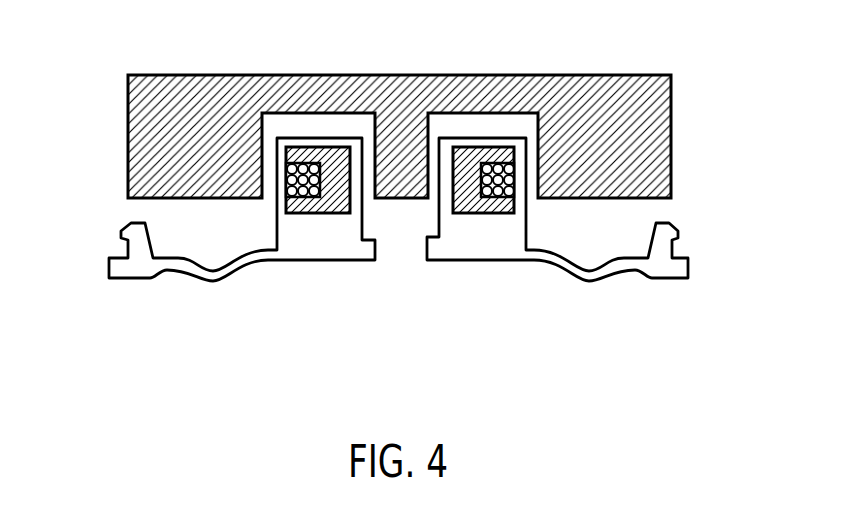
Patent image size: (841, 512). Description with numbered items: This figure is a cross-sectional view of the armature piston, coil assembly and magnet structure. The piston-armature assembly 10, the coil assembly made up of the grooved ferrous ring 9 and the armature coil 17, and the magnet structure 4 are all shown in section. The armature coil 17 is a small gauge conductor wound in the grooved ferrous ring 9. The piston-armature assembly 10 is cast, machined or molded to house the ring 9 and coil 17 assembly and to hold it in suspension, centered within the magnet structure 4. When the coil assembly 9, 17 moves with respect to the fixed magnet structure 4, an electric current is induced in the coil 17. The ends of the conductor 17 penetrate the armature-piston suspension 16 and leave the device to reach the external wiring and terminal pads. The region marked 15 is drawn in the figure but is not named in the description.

The magnet structure 4 is at (137, 155).
The grooved ferrous ring 9 is at (467, 195).
The piston-armature assembly 10 is at (318, 252).
The gap region 15 is at (398, 257).
The armature-piston suspension 16 is at (667, 267).
The armature coil 17 is at (515, 197).